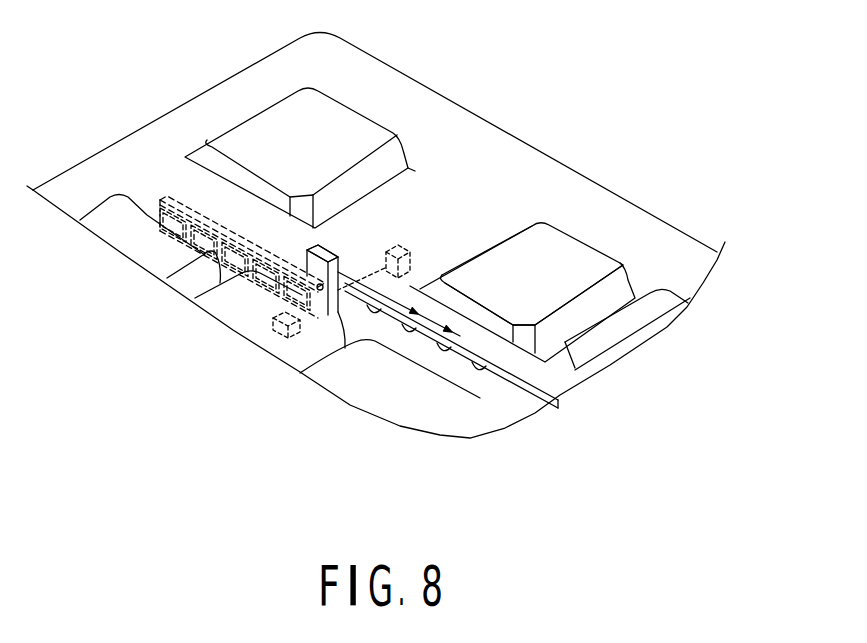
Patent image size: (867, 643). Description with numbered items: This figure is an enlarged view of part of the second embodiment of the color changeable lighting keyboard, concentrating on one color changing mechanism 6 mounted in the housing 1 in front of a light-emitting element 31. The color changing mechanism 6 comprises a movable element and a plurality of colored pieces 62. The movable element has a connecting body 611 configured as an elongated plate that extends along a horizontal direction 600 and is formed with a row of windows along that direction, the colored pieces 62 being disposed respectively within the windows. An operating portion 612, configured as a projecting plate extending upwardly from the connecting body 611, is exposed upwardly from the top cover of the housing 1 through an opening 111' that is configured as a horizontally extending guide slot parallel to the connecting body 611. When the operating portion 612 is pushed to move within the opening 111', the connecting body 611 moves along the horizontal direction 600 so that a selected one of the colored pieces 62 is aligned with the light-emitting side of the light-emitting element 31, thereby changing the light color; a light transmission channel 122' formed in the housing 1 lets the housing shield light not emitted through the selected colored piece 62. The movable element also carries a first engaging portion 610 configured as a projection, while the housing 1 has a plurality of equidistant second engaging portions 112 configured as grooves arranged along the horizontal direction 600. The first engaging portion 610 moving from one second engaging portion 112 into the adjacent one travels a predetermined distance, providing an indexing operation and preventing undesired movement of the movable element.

The housing 1 is at (512, 127).
The color changing mechanism 6 is at (300, 250).
The colored pieces 62 is at (165, 245).
The light transmission channel 122' is at (246, 364).
The first engaging portion 610 is at (320, 284).
The connecting body 611 is at (360, 350).
The operating portion 612 is at (340, 256).
The light-emitting element 31 is at (410, 262).
The horizontal direction 600 is at (450, 305).
The opening 111' is at (481, 364).
The second engaging portions 112 is at (410, 332).